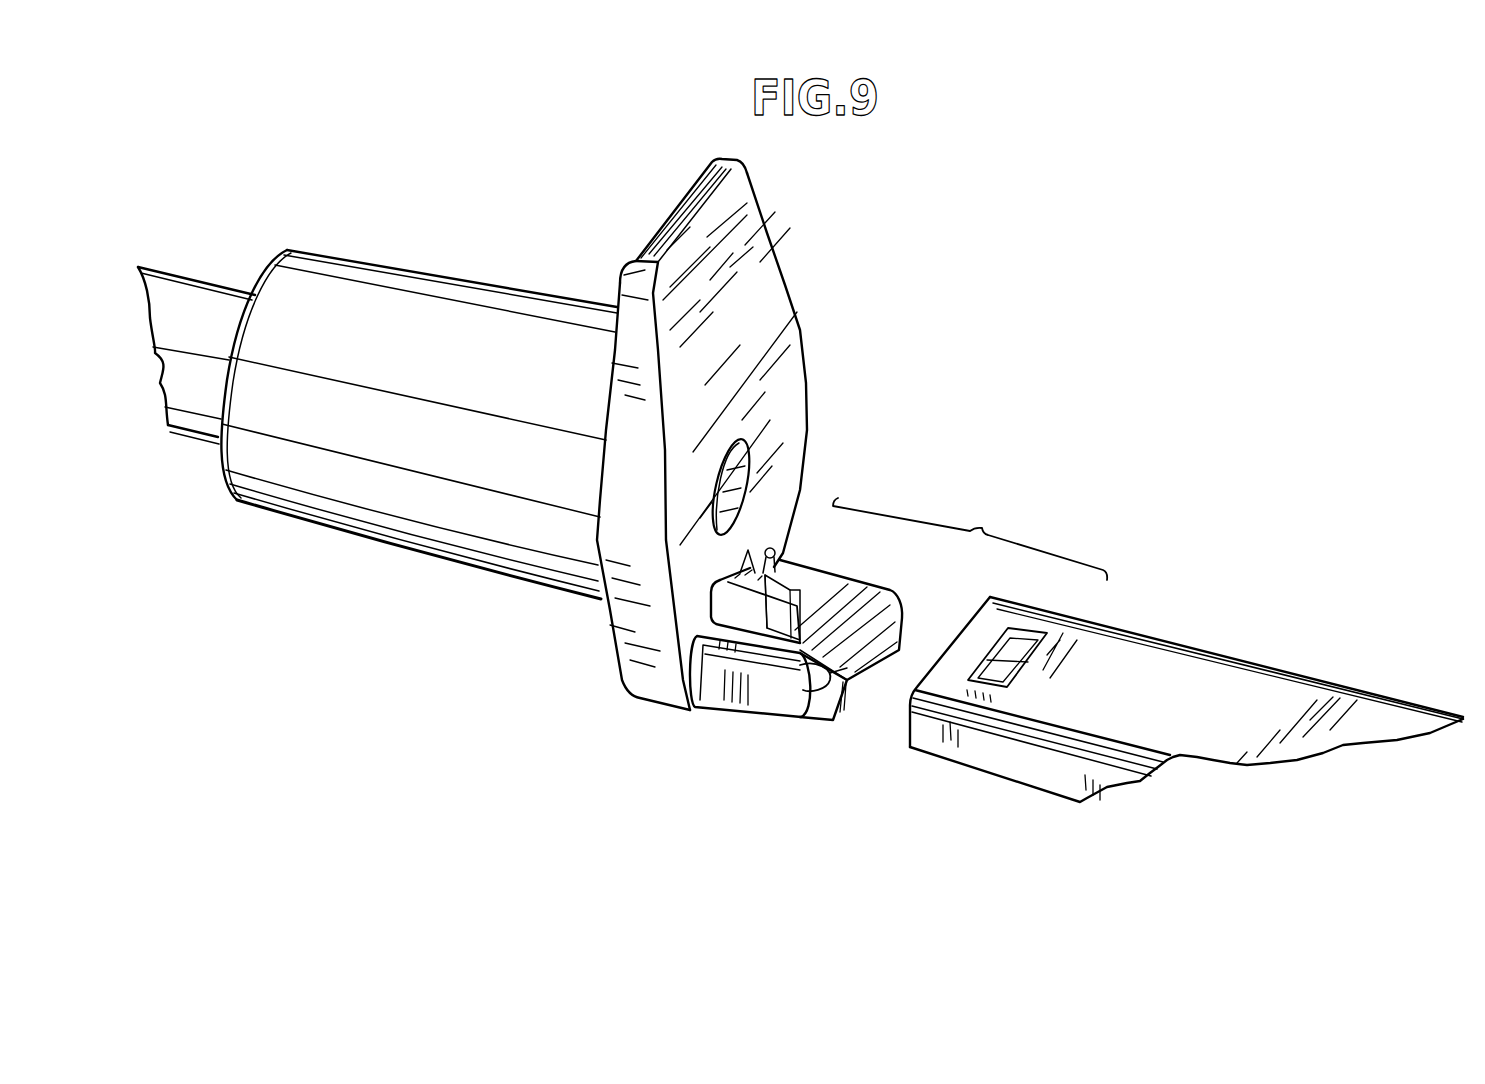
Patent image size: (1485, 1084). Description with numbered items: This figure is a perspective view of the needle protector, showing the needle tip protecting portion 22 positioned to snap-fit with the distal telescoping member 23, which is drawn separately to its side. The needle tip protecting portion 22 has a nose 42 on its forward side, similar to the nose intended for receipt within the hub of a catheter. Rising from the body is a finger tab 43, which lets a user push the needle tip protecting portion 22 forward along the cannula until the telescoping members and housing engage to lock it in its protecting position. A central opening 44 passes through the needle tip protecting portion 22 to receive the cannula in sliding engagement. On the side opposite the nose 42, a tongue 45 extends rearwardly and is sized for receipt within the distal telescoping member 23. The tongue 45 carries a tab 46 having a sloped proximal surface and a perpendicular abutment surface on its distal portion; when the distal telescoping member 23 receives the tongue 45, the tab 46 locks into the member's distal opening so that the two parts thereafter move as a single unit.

The needle tip protecting portion 22 is at (800, 400).
The distal telescoping member 23 is at (1152, 672).
The nose 42 is at (523, 565).
The finger tab 43 is at (760, 262).
The central opening 44 is at (723, 471).
The tongue 45 is at (757, 688).
The tab 46 is at (830, 575).